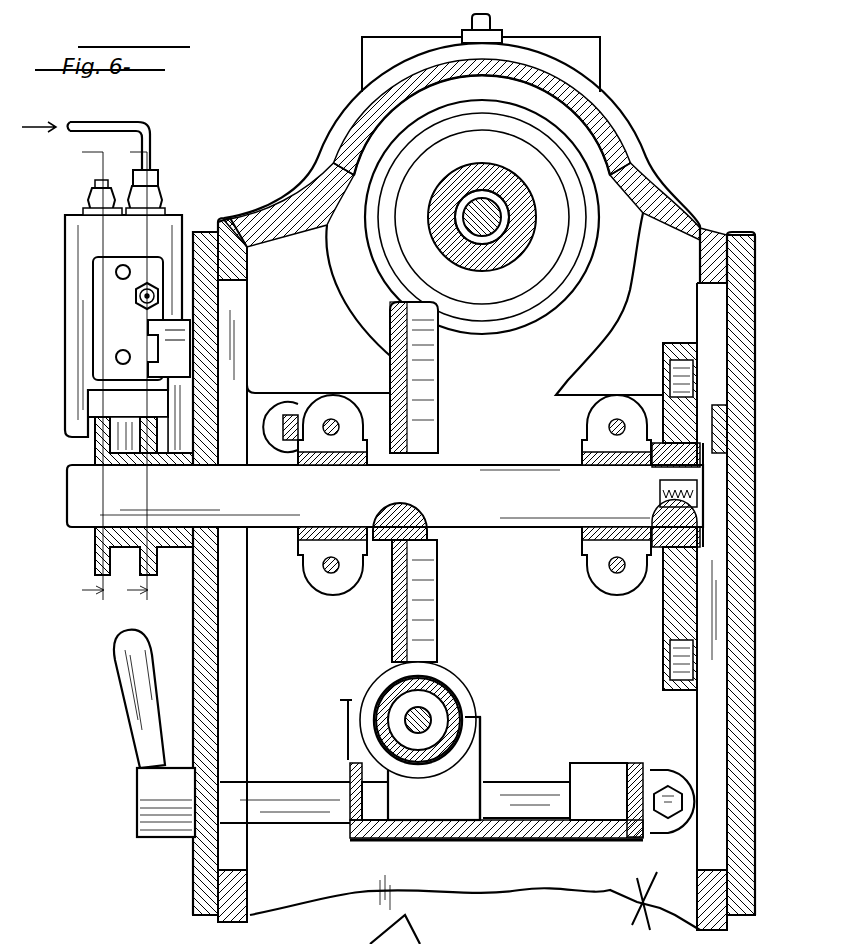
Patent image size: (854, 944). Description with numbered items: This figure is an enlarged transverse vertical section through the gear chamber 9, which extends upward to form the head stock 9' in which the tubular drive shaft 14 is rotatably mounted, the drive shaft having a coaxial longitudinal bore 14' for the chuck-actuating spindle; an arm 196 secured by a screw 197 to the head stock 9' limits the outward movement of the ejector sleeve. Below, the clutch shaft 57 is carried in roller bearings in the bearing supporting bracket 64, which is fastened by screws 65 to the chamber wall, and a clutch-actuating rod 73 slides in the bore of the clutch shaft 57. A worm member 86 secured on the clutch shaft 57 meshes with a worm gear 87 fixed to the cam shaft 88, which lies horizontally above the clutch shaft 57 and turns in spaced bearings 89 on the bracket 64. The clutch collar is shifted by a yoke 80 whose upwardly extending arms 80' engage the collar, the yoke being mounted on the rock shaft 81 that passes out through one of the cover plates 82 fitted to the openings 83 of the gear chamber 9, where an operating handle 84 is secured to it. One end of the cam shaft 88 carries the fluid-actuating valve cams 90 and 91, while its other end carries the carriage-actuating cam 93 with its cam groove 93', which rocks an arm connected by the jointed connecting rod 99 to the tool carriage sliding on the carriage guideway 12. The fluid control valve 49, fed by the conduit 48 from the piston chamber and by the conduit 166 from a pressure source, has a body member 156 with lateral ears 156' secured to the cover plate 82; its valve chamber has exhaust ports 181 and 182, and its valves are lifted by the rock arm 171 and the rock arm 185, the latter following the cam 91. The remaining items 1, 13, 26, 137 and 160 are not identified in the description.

The housing 1 is at (706, 236).
The head stock 9' is at (475, 227).
The gear chamber 9 is at (644, 908).
The carriage guideway 12 is at (78, 388).
The dimension line 13 is at (139, 388).
The tubular drive shaft 14 is at (495, 217).
The longitudinal bore 14' is at (503, 203).
The shaft bore 26 is at (470, 212).
The conduit 48 is at (137, 297).
The fluid control valve 49 is at (107, 327).
The clutch shaft 57 is at (408, 716).
The bearing supporting bracket 64 is at (608, 840).
The screws 65 is at (290, 418).
The clutch-actuating rod 73 is at (392, 721).
The yoke 80 is at (461, 768).
The upwardly extending arms 80' is at (426, 756).
The rock shaft 81 is at (283, 828).
The cover plates 82 is at (757, 736).
The openings 83 is at (232, 692).
The operating handle 84 is at (137, 745).
The worm member 86 is at (448, 695).
The worm gear 87 is at (428, 600).
The cam shaft 88 is at (497, 476).
The bearings 89 is at (300, 542).
The fluid-actuating valve cam 90 is at (150, 552).
The fluid-actuating valve cam 91 is at (108, 547).
The carriage-actuating cam 93 is at (733, 618).
The cam groove 93' is at (733, 393).
The jointed connecting rod 99 is at (716, 427).
The passage 137 is at (162, 350).
The body member 156 is at (92, 326).
The lateral ears 156' is at (227, 377).
The fitting nut 160 is at (100, 204).
The conduit 166 is at (138, 125).
The rock arm 171 is at (138, 407).
The exhaust port 181 is at (115, 272).
The exhaust port 182 is at (115, 357).
The rock arm 185 is at (97, 413).
The arm 196 is at (468, 36).
The screw 197 is at (490, 22).